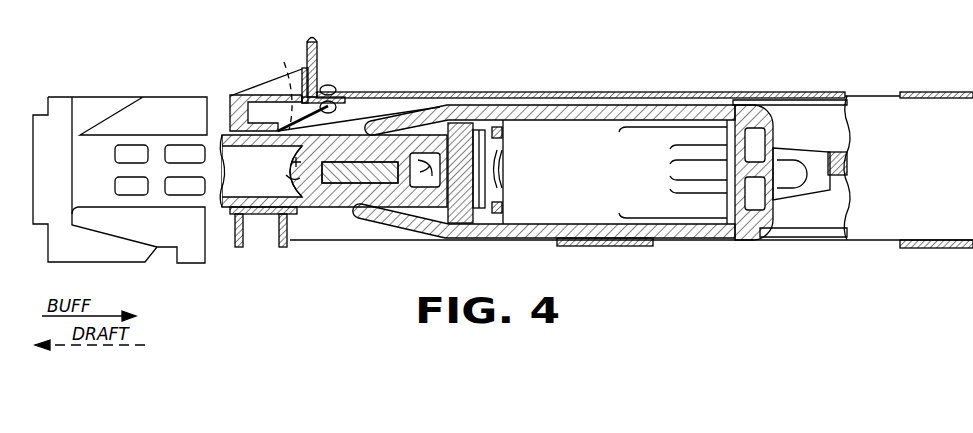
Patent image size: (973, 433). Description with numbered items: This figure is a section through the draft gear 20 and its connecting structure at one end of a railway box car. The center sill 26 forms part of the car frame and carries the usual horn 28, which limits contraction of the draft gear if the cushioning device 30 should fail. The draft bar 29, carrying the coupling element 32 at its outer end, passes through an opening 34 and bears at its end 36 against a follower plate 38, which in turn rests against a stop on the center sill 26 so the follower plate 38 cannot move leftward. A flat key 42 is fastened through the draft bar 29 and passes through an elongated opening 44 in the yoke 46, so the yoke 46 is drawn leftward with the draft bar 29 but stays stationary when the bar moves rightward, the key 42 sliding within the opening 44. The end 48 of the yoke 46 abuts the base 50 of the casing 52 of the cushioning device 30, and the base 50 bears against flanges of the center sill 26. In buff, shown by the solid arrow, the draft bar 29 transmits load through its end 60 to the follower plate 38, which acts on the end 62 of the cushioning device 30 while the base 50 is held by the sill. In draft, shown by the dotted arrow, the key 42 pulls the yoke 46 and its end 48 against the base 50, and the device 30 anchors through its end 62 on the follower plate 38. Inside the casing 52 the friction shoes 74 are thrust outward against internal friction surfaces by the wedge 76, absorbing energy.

The draft gear 20 is at (812, 90).
The center sill 26 is at (640, 97).
The horn 28 is at (230, 108).
The draft bar 29 is at (264, 213).
The cushioning device 30 is at (574, 132).
The coupling element 32 is at (138, 252).
The opening 34 is at (259, 128).
The end of draft bar 36 is at (437, 145).
The follower plate 38 is at (465, 122).
The flat key 42 is at (353, 178).
The elongated opening 44 is at (306, 68).
The yoke 46 is at (557, 108).
The end of yoke 48 is at (762, 137).
The base of casing 50 is at (731, 118).
The casing 52 is at (611, 126).
The end of draft bar 60 is at (428, 195).
The end of cushioning device 62 is at (478, 208).
The friction shoes 74 is at (500, 128).
The wedge 76 is at (497, 152).